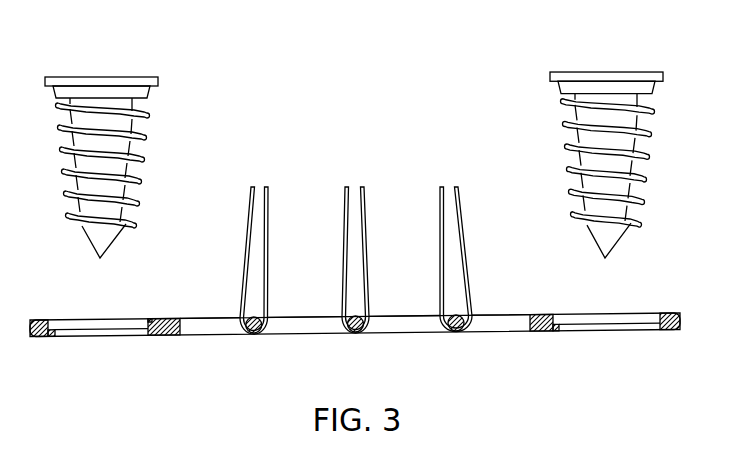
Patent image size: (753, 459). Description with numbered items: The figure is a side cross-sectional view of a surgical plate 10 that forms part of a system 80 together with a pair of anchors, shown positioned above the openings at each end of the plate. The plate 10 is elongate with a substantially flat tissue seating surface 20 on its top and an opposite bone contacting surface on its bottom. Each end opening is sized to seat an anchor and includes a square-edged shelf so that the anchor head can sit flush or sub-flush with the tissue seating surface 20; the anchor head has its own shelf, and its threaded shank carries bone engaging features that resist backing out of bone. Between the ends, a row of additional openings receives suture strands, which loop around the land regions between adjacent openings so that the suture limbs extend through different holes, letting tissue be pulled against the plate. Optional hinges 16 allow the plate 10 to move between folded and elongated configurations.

The surgical plate 10 is at (360, 319).
The hinges 16 is at (171, 336).
The tissue seating surface 20 is at (42, 319).
The system 80 is at (624, 137).